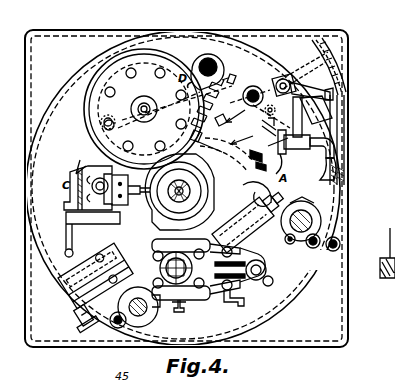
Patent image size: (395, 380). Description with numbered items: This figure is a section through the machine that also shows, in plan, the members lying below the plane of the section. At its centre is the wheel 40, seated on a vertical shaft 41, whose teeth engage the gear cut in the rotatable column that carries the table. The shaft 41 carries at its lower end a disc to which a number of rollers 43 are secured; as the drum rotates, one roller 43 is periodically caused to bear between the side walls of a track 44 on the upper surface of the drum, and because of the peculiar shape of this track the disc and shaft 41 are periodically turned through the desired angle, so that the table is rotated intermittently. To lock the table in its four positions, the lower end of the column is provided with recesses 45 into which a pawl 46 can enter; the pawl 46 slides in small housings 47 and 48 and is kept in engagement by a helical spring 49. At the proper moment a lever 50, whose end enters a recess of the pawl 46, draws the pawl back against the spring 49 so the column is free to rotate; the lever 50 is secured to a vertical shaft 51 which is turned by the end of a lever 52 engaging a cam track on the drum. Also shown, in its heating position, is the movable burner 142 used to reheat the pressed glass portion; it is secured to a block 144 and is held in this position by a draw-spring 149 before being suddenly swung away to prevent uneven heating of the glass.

The wheel 40 is at (144, 52).
The vertical shaft 41 is at (140, 110).
The rollers 43 is at (104, 124).
The track 44 is at (244, 137).
The recesses 45 is at (162, 223).
The pawl 46 is at (209, 151).
The housing 47 is at (235, 119).
The housing 48 is at (229, 82).
The helical spring 49 is at (255, 86).
The lever 50 is at (210, 132).
The vertical shaft 51 is at (278, 80).
The lever 52 is at (275, 112).
The burner 142 is at (270, 157).
The block 144 is at (322, 100).
The draw-spring 149 is at (333, 130).